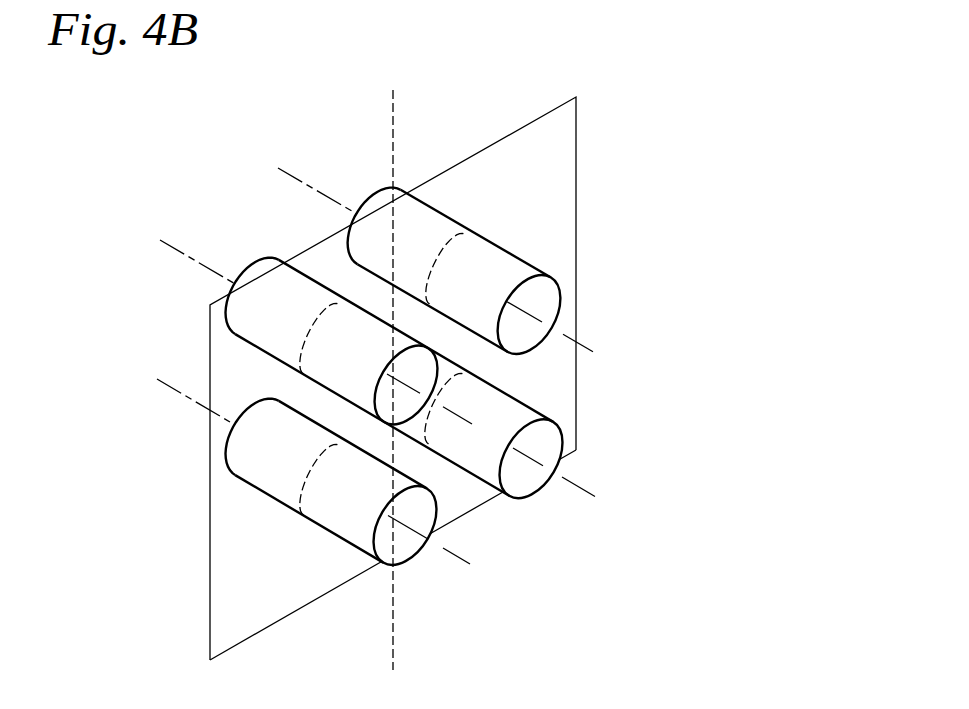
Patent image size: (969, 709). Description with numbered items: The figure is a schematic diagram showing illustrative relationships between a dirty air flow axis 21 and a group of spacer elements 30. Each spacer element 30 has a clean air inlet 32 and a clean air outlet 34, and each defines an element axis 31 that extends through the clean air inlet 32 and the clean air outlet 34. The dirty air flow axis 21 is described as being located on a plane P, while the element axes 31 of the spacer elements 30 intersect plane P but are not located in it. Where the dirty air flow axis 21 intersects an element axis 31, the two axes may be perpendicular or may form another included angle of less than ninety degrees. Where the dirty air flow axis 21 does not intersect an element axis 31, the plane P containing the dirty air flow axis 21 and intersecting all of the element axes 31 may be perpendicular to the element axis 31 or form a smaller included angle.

The plane P is at (520, 130).
The dirty air flow axis 21 is at (392, 138).
The spacer element 30 is at (370, 330).
The element axis 31 is at (600, 326).
The clean air inlet 32 is at (438, 364).
The clean air outlet 34 is at (373, 193).